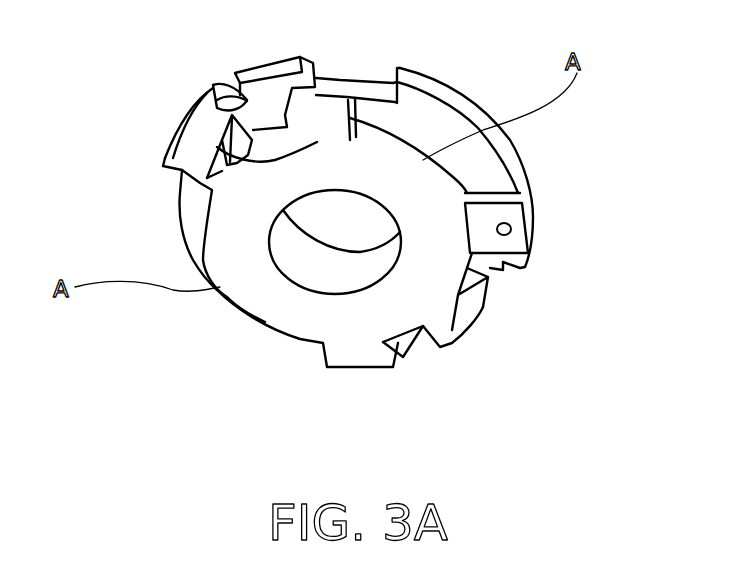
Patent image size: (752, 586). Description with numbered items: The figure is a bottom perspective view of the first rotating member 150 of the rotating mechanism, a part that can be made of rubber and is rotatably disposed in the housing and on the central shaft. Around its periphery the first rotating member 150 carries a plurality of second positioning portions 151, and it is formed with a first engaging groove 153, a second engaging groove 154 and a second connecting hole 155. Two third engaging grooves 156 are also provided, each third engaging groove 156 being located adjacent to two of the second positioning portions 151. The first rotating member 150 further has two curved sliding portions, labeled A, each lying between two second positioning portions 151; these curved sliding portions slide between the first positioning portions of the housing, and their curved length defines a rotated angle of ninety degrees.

The first rotating member 150 is at (531, 168).
The second positioning portions 151 is at (247, 140).
The first engaging groove 153 is at (222, 88).
The second engaging groove 154 is at (352, 63).
The second connecting hole 155 is at (512, 230).
The third engaging grooves 156 is at (173, 123).